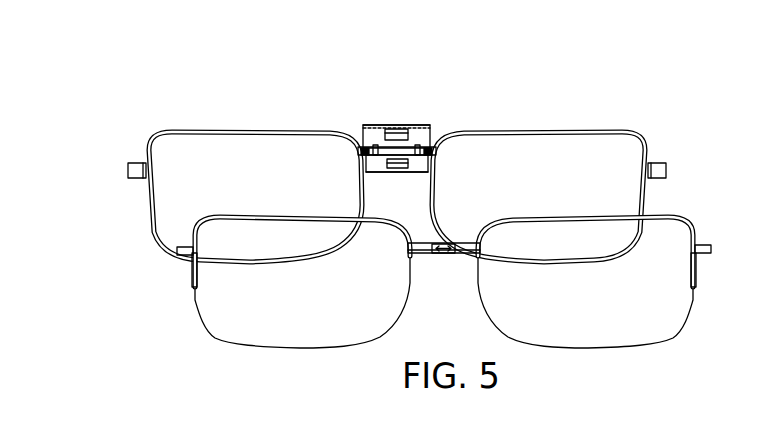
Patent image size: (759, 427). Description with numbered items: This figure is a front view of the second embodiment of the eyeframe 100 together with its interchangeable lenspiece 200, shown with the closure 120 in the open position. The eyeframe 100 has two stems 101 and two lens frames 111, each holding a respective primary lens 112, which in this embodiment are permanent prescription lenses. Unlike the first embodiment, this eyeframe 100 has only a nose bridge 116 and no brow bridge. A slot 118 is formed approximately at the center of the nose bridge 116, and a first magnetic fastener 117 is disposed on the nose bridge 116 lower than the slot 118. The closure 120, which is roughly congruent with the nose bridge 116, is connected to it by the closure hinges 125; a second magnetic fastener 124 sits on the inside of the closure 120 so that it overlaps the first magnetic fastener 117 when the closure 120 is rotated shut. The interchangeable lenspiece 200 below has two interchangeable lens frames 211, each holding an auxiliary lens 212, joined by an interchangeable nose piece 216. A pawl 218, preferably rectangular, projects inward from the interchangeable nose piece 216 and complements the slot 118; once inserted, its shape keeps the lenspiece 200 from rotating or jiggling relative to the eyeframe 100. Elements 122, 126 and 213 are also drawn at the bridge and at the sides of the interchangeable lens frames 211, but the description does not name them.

The eyeframe 100 is at (396, 164).
The stem 101 is at (132, 164).
The lens frame 111 is at (615, 131).
The primary lens 112 is at (273, 190).
The nose bridge 116 is at (373, 173).
The first magnetic fastener 117 is at (398, 173).
The slot 118 is at (416, 172).
The closure 120 is at (388, 150).
The upper magnetic member 122 is at (415, 128).
The second magnetic fastener 124 is at (386, 126).
The closure hinge 125 is at (364, 146).
The screw 126 is at (375, 144).
The interchangeable lenspiece 200 is at (440, 300).
The interchangeable lens frame 211 is at (194, 287).
The auxiliary lens 212 is at (315, 311).
The clip hook 213 is at (171, 256).
The interchangeable nose piece 216 is at (422, 256).
The pawl 218 is at (440, 254).